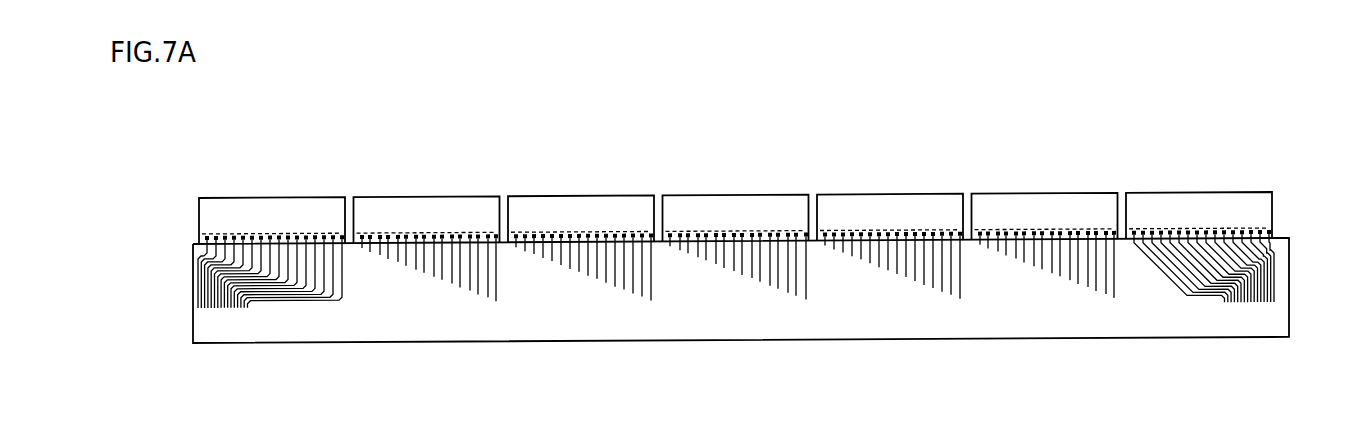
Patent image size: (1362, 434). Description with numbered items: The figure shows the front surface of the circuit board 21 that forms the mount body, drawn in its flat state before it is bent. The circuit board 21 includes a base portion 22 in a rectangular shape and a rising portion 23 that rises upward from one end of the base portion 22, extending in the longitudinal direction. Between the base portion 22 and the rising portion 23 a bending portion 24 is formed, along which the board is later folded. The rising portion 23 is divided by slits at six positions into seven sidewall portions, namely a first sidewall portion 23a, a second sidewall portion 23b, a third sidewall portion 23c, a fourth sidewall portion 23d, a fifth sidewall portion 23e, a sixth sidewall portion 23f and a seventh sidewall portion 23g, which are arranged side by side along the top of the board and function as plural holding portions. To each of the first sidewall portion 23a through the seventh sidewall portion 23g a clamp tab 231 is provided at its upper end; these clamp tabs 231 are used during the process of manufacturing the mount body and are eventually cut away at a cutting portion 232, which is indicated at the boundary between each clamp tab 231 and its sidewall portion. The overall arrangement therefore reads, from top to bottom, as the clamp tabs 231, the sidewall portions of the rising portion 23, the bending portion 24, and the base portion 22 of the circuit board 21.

The circuit board 21 is at (1248, 173).
The base portion 22 is at (741, 290).
The rising portion 23 is at (687, 250).
The first sidewall portion 23a is at (222, 252).
The second sidewall portion 23b is at (427, 249).
The third sidewall portion 23c is at (581, 248).
The fourth sidewall portion 23d is at (736, 248).
The fifth sidewall portion 23e is at (890, 247).
The sixth sidewall portion 23f is at (1045, 246).
The seventh sidewall portion 23g is at (1200, 247).
The clamp tab 231 is at (1199, 215).
The cutting portion 232 is at (181, 233).
The bending portion 24 is at (181, 242).